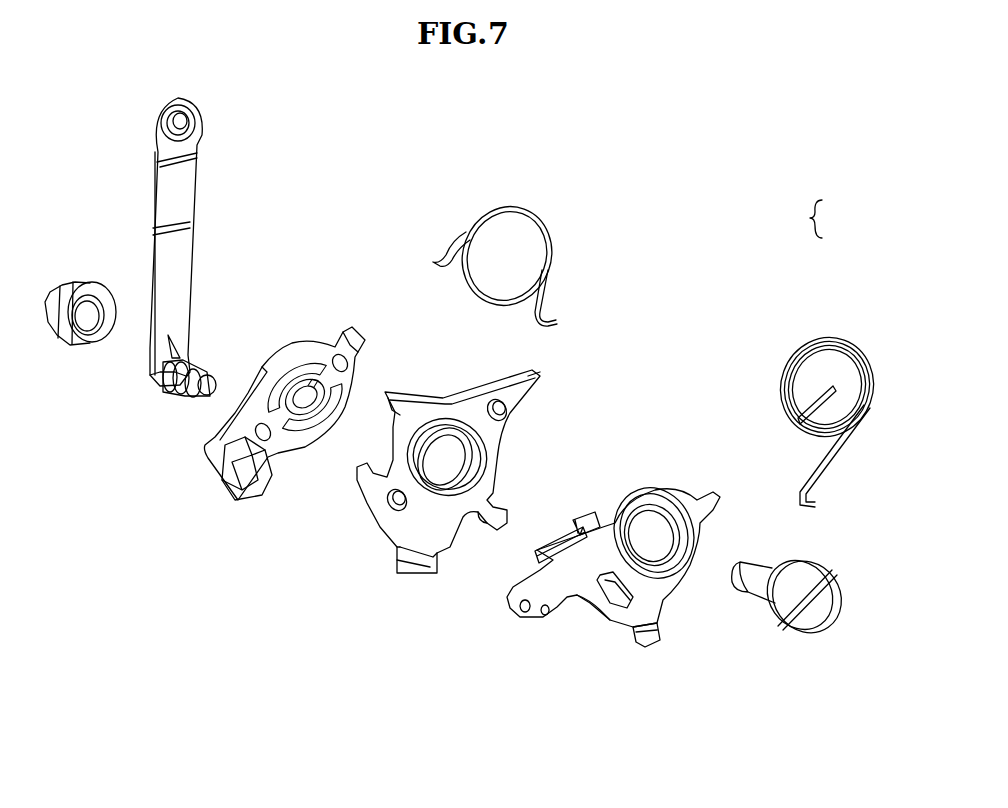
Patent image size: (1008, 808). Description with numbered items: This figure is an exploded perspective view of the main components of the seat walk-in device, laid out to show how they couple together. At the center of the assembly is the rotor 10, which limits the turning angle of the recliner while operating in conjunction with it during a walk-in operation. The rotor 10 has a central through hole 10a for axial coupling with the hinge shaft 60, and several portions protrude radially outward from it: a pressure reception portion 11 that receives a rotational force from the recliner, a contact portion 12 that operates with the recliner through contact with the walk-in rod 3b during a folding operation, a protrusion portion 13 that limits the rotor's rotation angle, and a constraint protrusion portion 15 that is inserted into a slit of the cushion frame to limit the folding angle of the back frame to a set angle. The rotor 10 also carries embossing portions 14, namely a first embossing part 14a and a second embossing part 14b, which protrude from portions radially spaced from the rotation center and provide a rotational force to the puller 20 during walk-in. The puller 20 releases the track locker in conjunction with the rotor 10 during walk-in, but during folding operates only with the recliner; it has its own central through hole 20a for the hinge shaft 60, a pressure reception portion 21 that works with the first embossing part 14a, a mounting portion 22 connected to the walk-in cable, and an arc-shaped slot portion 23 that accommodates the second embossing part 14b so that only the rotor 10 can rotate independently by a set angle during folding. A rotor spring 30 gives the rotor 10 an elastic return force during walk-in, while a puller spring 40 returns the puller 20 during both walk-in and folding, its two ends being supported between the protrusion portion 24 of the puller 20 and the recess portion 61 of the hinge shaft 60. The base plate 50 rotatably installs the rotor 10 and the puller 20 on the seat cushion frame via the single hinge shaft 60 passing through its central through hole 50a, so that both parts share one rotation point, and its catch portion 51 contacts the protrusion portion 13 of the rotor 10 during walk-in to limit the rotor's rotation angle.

The walk-in rod 3b is at (180, 187).
The rotor 10 is at (438, 506).
The through hole 10a is at (430, 452).
The pressure reception portion 11 is at (410, 398).
The contact portion 12 is at (488, 520).
The protrusion portion 13 is at (420, 572).
The embossing portions 14 is at (822, 219).
The first embossing part 14a is at (505, 416).
The second embossing part 14b is at (395, 508).
The constraint protrusion portion 15 is at (535, 382).
The puller 20 is at (602, 585).
The through hole 20a is at (642, 520).
The pressure reception portion 21 is at (715, 505).
The mounting portion 22 is at (548, 605).
The slot portion 23 is at (615, 600).
The protrusion portion 24 is at (660, 630).
The rotor spring 30 is at (523, 205).
The puller spring 40 is at (828, 340).
The base plate 50 is at (241, 438).
The through hole 50a is at (308, 378).
The catch portion 51 is at (262, 470).
The hinge shaft 60 is at (774, 629).
The recess portion 61 is at (815, 610).